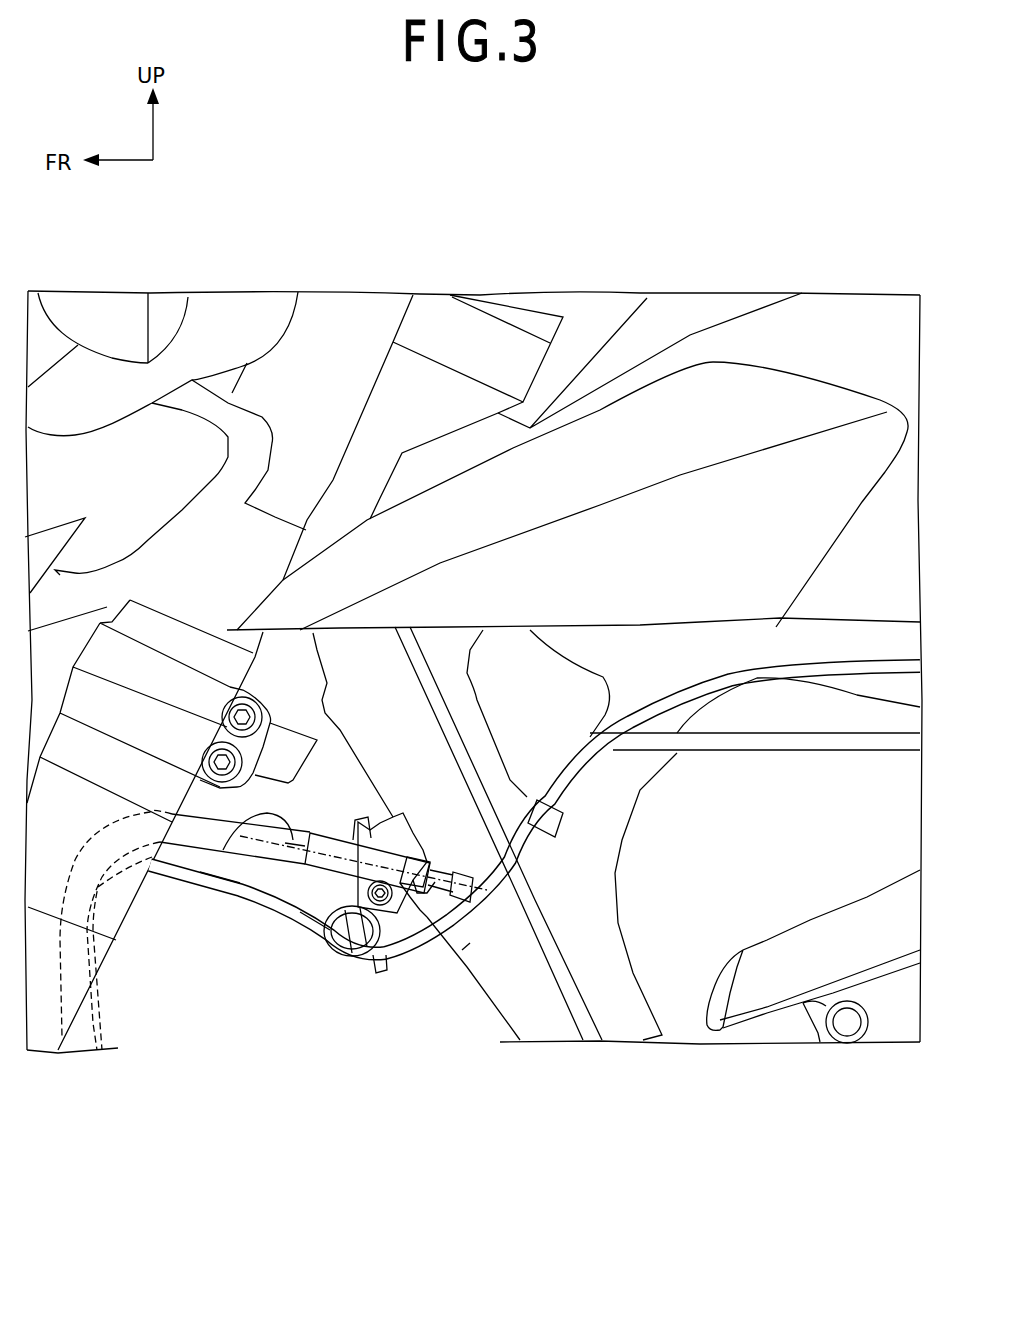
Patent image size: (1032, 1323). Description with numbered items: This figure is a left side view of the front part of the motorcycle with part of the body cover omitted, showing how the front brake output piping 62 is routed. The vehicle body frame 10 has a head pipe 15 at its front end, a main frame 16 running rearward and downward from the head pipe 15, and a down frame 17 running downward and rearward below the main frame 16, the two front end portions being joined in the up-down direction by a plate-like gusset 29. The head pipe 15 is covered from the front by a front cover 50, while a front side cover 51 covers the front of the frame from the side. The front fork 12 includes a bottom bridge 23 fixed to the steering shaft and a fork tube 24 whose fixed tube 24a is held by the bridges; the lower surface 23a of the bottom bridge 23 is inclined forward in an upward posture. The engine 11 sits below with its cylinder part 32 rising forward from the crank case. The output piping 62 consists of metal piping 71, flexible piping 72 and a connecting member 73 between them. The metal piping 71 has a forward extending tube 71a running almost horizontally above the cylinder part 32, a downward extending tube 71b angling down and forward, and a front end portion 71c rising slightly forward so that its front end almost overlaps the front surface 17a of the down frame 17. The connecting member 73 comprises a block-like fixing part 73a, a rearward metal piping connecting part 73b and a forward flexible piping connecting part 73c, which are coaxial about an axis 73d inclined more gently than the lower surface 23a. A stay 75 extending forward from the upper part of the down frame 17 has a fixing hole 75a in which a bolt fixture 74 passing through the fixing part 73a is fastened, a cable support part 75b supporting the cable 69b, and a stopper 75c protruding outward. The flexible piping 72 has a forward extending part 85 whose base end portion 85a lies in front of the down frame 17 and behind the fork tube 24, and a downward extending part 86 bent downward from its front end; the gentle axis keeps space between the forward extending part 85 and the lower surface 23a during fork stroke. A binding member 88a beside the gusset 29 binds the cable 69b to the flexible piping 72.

The vehicle body frame 10 is at (481, 319).
The engine 11 is at (846, 1044).
The front fork 12 is at (117, 611).
The head pipe 15 is at (423, 388).
The main frame 16 is at (845, 647).
The down frame 17 is at (548, 1027).
The front surface of the down frame 17a is at (462, 950).
The bottom bridge 23 is at (280, 753).
The lower surface of the bottom bridge 23a is at (137, 749).
The fork tube 24 is at (372, 297).
The fixed tube 24a is at (328, 353).
The gusset 29 is at (620, 770).
The cylinder part 32 is at (887, 1027).
The front cover 50 is at (120, 393).
The front side cover 51 is at (740, 342).
The output piping 62 is at (270, 940).
The cable 69b is at (278, 866).
The metal piping 71 is at (787, 750).
The forward extending tube 71a is at (818, 750).
The downward extending tube 71b is at (600, 800).
The front end portion 71c is at (470, 943).
The flexible piping 72 is at (258, 930).
The connecting member 73 is at (395, 915).
The fixing part 73a is at (423, 943).
The metal piping connecting part 73b is at (430, 927).
The flexible piping connecting part 73c is at (330, 905).
The axis 73d is at (258, 856).
The fixture 74 is at (388, 948).
The stay 75 is at (385, 920).
The fixing hole 75a is at (360, 935).
The cable support part 75b is at (340, 950).
The stopper 75c is at (350, 830).
The forward extending part 85 is at (207, 847).
The base end portion 85a is at (323, 862).
The downward extending part 86 is at (80, 1038).
The binding member 88a is at (547, 827).